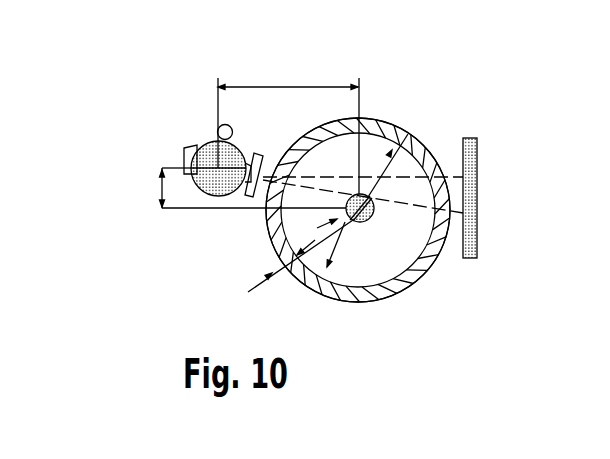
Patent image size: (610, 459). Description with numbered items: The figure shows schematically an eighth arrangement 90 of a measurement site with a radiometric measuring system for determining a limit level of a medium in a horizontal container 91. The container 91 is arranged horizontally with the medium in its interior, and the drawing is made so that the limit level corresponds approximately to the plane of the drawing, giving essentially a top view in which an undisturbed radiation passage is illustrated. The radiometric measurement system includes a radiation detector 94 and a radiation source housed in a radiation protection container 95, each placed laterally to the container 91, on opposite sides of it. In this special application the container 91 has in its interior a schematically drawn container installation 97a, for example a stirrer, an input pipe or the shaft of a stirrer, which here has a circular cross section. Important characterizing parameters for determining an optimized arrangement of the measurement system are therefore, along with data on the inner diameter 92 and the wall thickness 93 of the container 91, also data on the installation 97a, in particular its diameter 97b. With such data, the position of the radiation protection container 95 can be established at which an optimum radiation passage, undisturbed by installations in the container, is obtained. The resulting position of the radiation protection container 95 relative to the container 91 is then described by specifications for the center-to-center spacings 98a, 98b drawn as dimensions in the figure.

The eighth arrangement 90 is at (507, 95).
The horizontal container 91 is at (380, 292).
The inner diameter 92 is at (352, 222).
The wall thickness 93 is at (250, 290).
The radiation detector 94 is at (477, 192).
The radiation protection container 95 is at (205, 143).
The container installation 97a is at (372, 217).
The diameter 97b is at (386, 197).
The center-to-center spacing 98a is at (298, 87).
The center-to-center spacing 98b is at (162, 190).